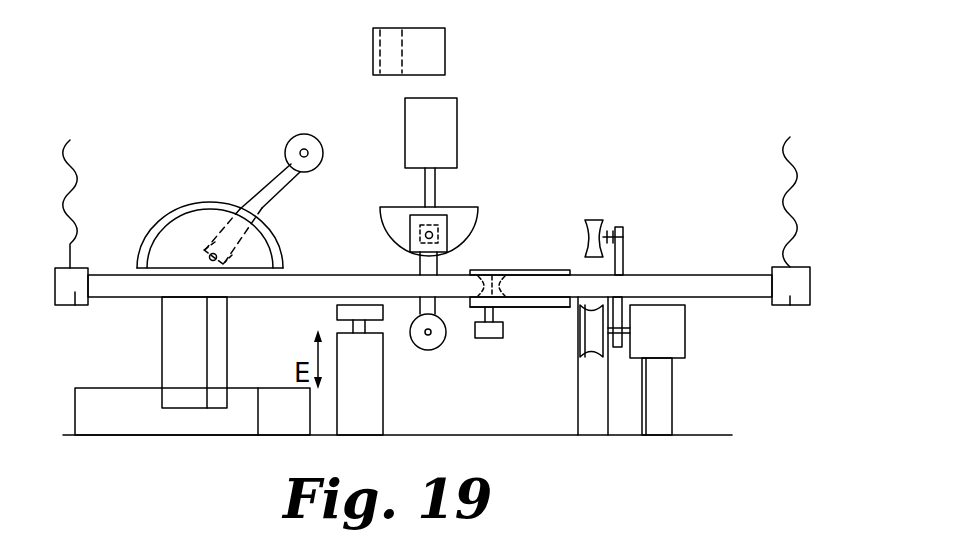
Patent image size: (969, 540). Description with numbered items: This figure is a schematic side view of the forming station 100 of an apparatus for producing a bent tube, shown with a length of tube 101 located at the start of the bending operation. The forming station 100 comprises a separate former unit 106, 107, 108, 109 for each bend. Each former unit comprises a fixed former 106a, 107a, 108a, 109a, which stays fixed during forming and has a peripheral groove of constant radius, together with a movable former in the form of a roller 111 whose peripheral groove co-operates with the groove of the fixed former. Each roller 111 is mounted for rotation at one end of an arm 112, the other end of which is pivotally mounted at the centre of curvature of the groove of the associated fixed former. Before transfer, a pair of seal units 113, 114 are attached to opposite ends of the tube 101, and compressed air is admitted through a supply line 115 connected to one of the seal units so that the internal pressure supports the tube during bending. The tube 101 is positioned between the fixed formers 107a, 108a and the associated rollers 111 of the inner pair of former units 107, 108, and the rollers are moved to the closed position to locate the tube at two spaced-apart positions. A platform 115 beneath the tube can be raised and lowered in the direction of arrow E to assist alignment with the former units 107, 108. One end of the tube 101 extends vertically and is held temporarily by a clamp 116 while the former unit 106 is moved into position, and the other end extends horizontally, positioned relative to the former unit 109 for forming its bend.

The forming station 100 is at (580, 82).
The tube 101 is at (722, 284).
The former unit 106 is at (207, 168).
The fixed former 106a is at (175, 236).
The former unit 107 is at (476, 172).
The fixed former 107a is at (386, 216).
The former unit 108 is at (517, 250).
The fixed former 108a is at (545, 308).
The former unit 109 is at (638, 212).
The fixed former 109a is at (593, 345).
The roller 111 is at (314, 136).
The arm 112 is at (262, 207).
The seal unit 113 is at (790, 306).
The seal unit 114 is at (75, 306).
The supply line / platform 115 is at (792, 186).
The clamp 116 is at (428, 42).